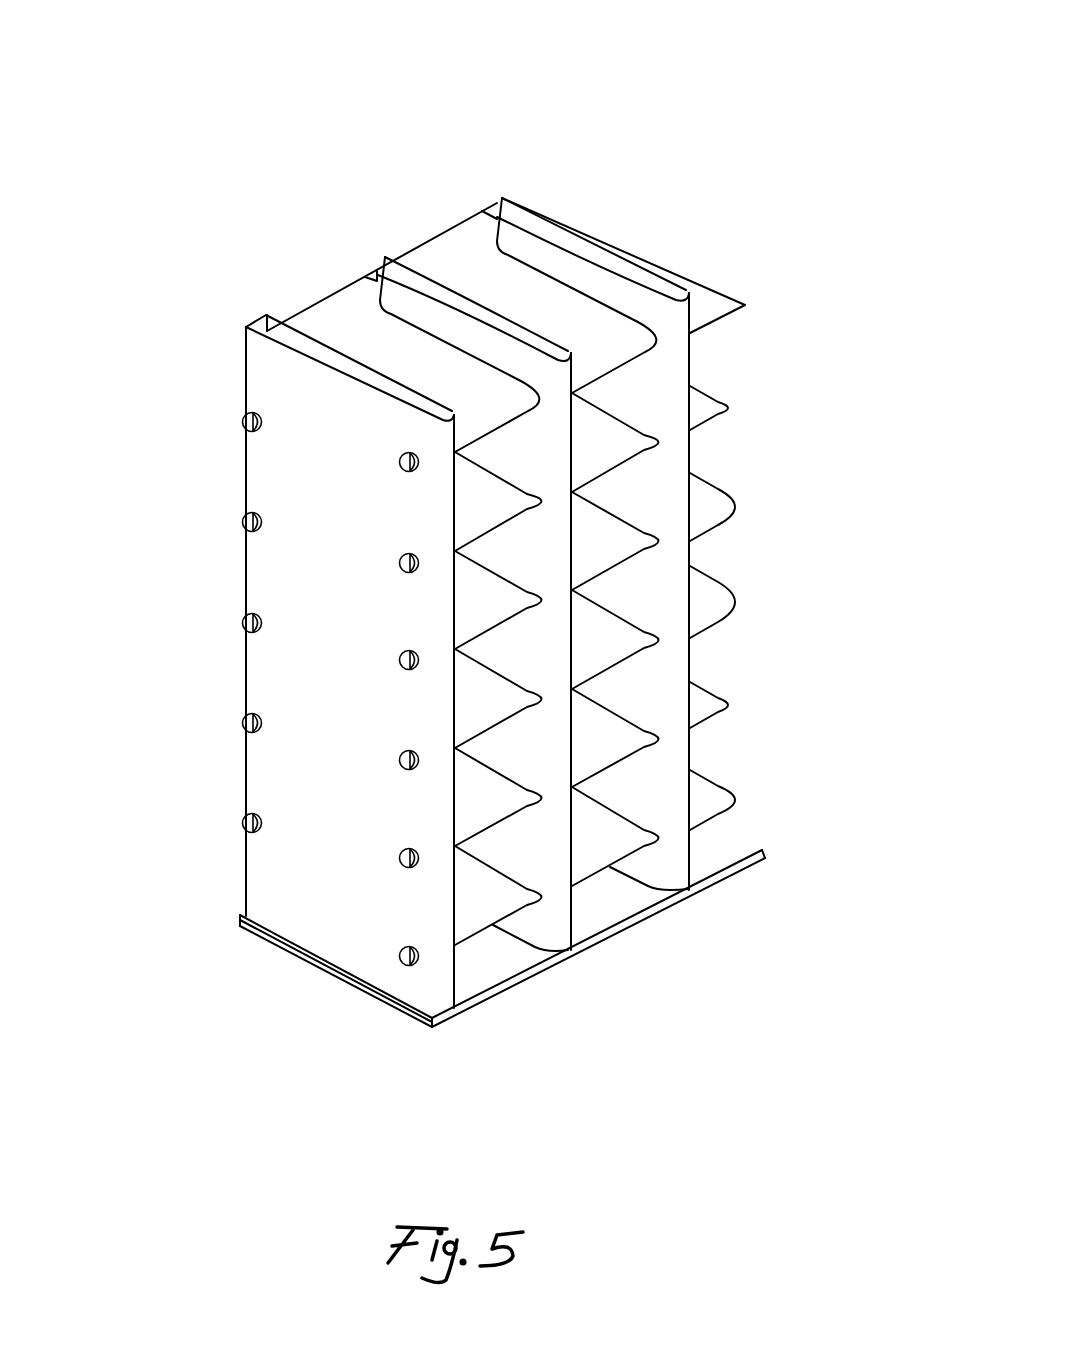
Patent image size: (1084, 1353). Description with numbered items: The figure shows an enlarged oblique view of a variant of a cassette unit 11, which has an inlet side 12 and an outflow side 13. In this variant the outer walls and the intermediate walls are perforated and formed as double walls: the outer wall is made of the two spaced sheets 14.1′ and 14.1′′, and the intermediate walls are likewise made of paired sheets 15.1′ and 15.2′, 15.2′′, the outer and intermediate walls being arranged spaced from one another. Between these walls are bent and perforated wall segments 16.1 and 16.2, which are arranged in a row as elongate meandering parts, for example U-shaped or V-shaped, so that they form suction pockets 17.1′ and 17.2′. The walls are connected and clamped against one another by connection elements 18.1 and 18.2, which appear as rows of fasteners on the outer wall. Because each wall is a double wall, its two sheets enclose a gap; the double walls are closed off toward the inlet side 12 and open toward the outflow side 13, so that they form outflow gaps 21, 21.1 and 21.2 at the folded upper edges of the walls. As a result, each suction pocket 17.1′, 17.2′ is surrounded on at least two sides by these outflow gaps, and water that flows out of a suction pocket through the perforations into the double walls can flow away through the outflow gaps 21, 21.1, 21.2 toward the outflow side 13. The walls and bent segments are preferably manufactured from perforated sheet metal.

The cassette unit 11 is at (660, 182).
The inlet side 12 is at (770, 645).
The outflow side 13 is at (210, 353).
The double wall 14.1′ is at (312, 358).
The double wall 14.1′′ is at (450, 286).
The double intermediate wall 15.1′ is at (432, 297).
The double intermediate wall 15.2′ is at (547, 242).
The double intermediate wall 15.2′′ is at (562, 230).
The bent and perforated wall segment 16.1 is at (479, 930).
The bent and perforated wall segment 16.2 is at (597, 875).
The suction pocket 17.1′ is at (515, 852).
The suction pocket 17.2′ is at (634, 790).
The connection element 18.1 is at (244, 425).
The connection element 18.2 is at (402, 464).
The outflow gap 21 is at (325, 356).
The outflow gap 21.1 is at (442, 297).
The outflow gap 21.2 is at (557, 235).